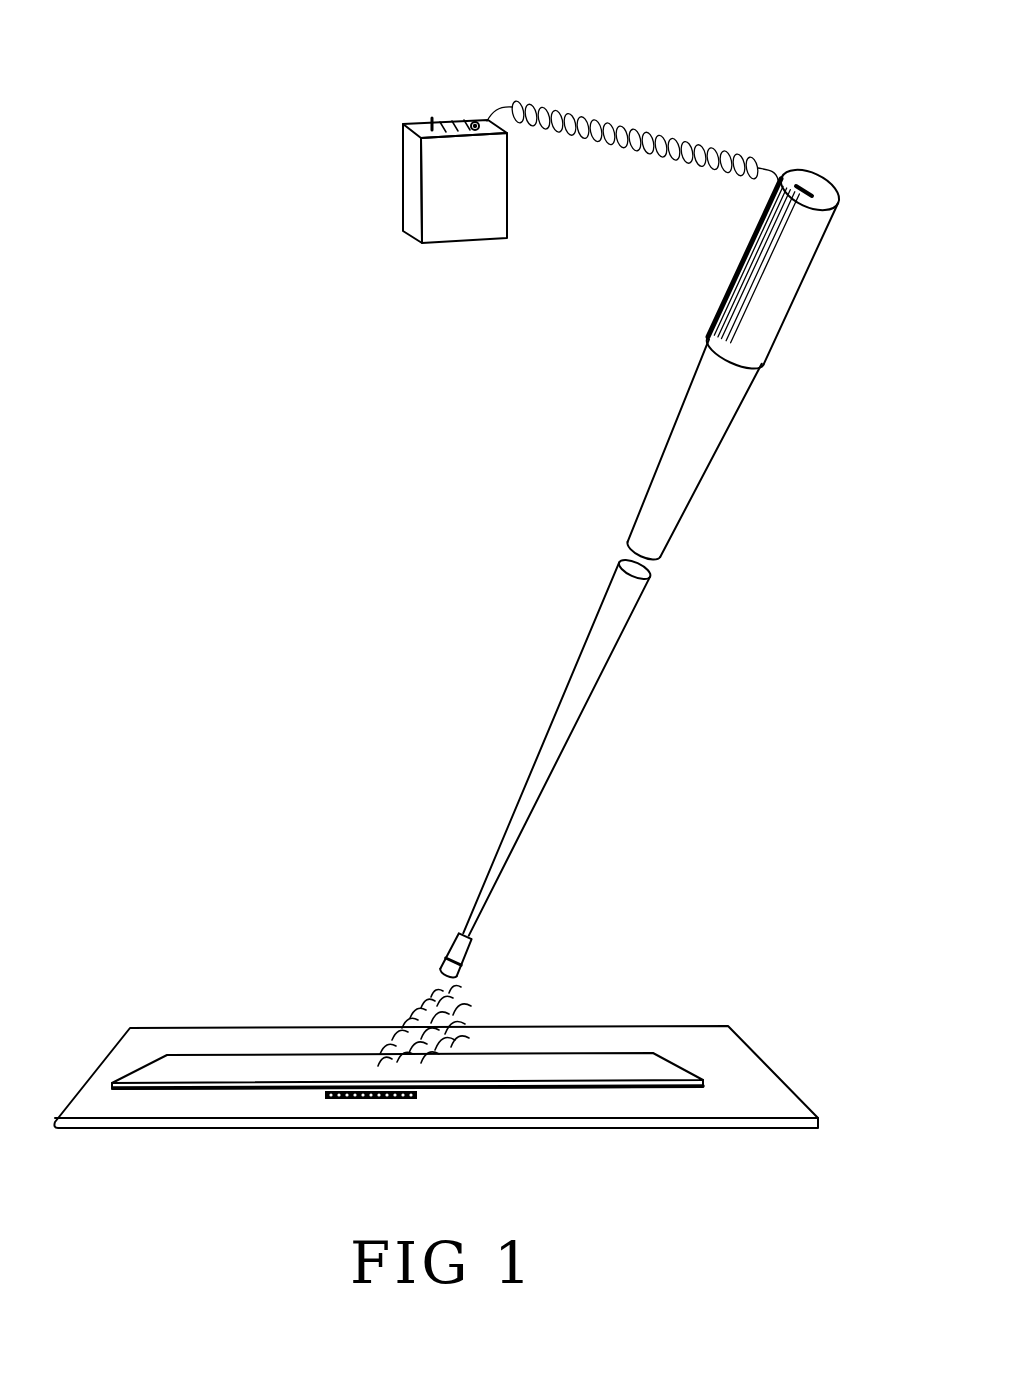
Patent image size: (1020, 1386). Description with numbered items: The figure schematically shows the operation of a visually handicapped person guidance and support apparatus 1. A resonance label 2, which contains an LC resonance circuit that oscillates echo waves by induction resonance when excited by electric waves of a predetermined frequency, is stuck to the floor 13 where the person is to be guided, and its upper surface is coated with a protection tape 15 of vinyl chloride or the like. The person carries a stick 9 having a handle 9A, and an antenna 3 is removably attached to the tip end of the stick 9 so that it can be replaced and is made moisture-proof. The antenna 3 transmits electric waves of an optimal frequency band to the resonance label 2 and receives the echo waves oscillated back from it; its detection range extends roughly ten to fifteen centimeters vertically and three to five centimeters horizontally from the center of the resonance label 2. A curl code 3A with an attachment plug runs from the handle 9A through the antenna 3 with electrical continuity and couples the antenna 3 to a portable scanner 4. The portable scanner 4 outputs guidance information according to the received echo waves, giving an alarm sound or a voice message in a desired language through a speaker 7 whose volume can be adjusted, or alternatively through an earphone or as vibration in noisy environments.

The visually handicapped person guidance and support apparatus 1 is at (396, 478).
The resonance label 2 is at (365, 1100).
The antenna 3 is at (462, 976).
The curl code 3A is at (650, 123).
The portable scanner 4 is at (428, 192).
The speaker 7 is at (461, 122).
The stick 9 is at (687, 468).
The handle 9A is at (797, 262).
The floor 13 is at (717, 1050).
The protection tape 15 is at (242, 1065).